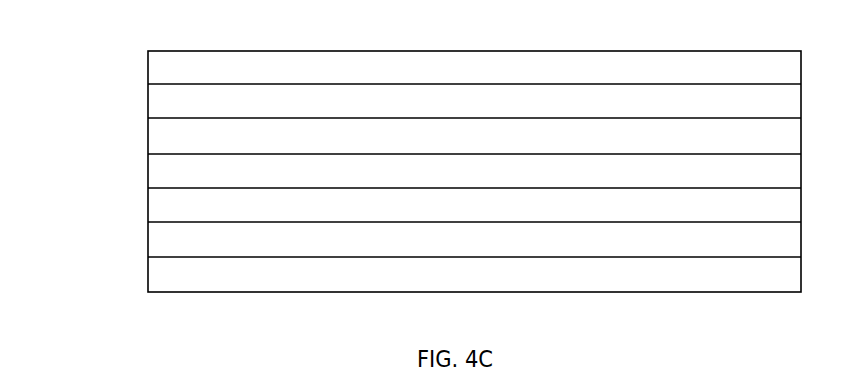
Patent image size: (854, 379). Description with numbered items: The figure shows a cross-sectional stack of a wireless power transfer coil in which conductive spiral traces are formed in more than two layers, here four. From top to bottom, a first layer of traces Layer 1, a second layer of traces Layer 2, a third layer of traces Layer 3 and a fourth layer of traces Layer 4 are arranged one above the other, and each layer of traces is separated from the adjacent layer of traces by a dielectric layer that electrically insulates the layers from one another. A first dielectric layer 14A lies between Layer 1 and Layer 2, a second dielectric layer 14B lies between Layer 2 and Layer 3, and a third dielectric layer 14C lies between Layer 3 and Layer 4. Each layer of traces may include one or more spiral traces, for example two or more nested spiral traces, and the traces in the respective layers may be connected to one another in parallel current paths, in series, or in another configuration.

The dielectric layer 14A is at (148, 101).
The dielectric layer 14B is at (148, 171).
The dielectric layer 14C is at (148, 239).
The layer of traces Layer 1 is at (148, 67).
The layer of traces Layer 2 is at (148, 136).
The layer of traces Layer 3 is at (148, 205).
The layer of traces Layer 4 is at (148, 275).